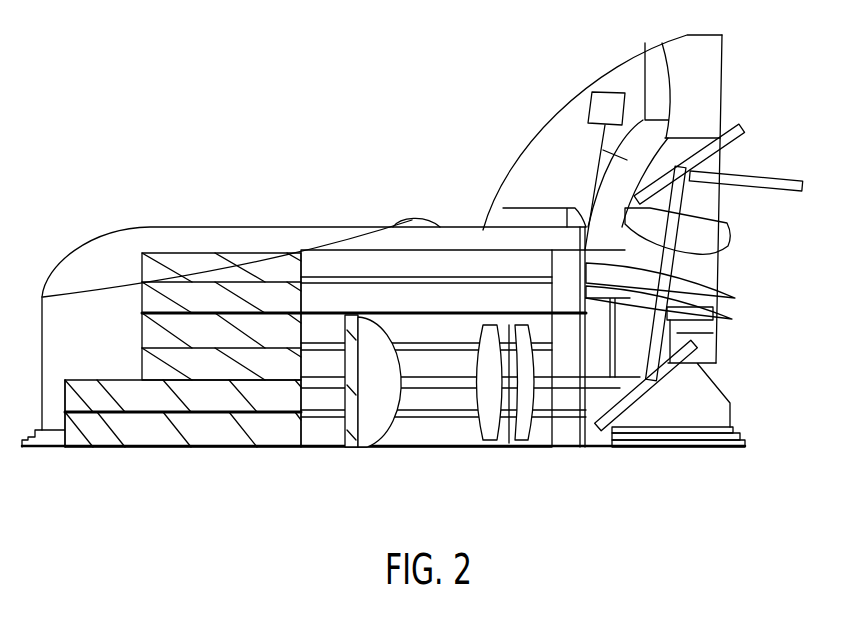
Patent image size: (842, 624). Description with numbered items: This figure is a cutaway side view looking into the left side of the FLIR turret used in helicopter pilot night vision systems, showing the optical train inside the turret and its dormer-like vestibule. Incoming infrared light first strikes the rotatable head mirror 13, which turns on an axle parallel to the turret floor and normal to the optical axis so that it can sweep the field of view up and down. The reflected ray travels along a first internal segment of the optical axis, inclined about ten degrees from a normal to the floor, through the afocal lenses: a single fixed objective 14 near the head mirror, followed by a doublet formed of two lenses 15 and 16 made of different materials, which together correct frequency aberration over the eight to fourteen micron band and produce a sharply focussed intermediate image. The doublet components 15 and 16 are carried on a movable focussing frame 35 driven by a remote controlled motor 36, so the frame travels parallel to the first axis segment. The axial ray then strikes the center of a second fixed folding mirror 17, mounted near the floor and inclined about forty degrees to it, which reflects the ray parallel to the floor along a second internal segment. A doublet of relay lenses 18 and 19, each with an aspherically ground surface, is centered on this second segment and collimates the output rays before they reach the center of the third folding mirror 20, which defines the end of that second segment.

The head mirror 13 is at (735, 128).
The fixed objective lens 14 is at (733, 232).
The doublet lens 15 is at (737, 298).
The doublet lens 16 is at (734, 319).
The second fixed folding mirror 17 is at (624, 400).
The relay lens 18 is at (531, 435).
The relay lens 19 is at (473, 432).
The third folding mirror 20 is at (388, 437).
The focussing frame 35 is at (592, 192).
The remote controlled motor 36 is at (590, 110).